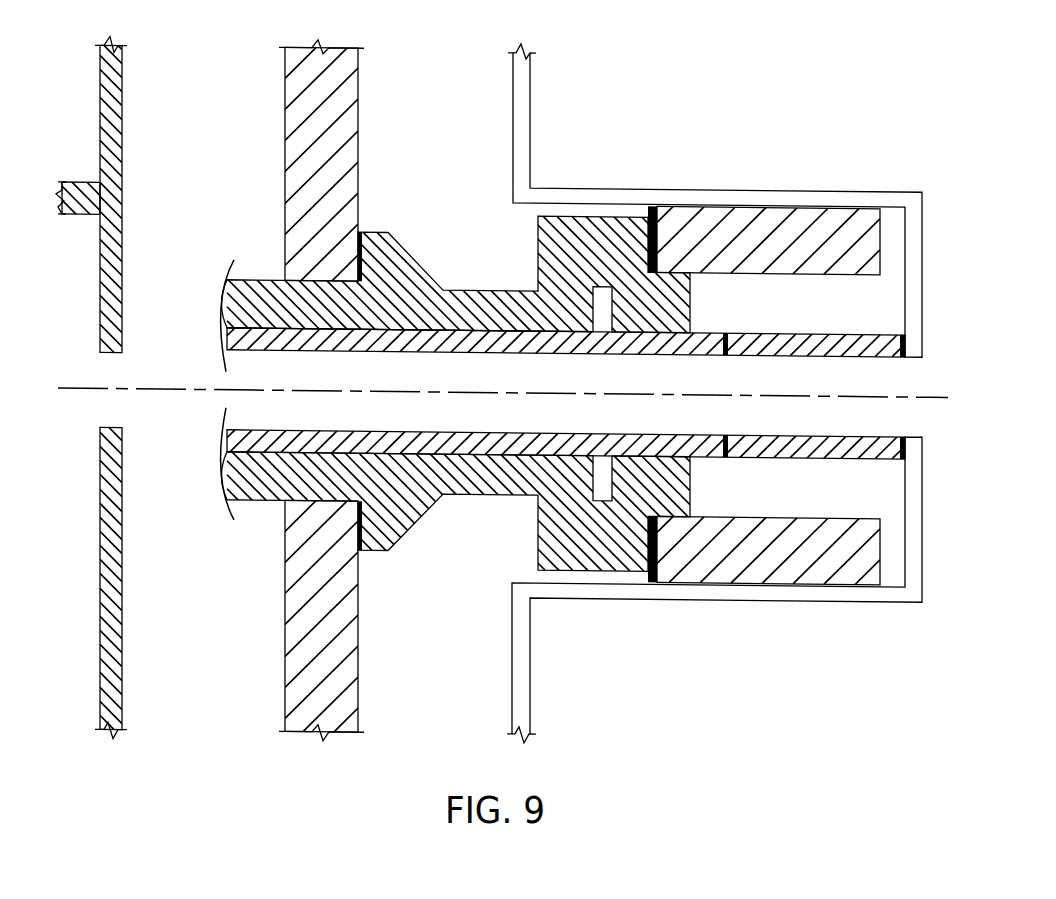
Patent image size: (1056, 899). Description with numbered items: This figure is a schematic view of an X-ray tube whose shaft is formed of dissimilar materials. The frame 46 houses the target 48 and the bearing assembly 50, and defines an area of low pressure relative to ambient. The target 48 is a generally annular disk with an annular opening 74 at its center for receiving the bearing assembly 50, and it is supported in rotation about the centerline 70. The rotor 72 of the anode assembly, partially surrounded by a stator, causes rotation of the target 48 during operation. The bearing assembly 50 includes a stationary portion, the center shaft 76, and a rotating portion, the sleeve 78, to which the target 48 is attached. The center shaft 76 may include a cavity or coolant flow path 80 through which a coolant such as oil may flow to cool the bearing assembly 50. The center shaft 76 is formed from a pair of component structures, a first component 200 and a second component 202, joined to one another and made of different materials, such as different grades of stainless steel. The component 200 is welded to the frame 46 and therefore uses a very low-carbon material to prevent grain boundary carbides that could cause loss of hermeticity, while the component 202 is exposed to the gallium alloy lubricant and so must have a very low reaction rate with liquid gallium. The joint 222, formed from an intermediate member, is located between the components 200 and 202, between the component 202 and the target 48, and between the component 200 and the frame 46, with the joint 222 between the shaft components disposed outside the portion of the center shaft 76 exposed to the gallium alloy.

The frame 46 is at (922, 273).
The target 48 is at (283, 612).
The bearing assembly 50 is at (695, 481).
The centerline 70 is at (157, 389).
The rotor 72 is at (738, 200).
The annular opening 74 is at (272, 270).
The center shaft 76 is at (510, 429).
The sleeve 78 is at (492, 494).
The coolant flow path 80 is at (930, 402).
The component 200 is at (813, 329).
The component 202 is at (552, 327).
The joint 222 is at (362, 231).